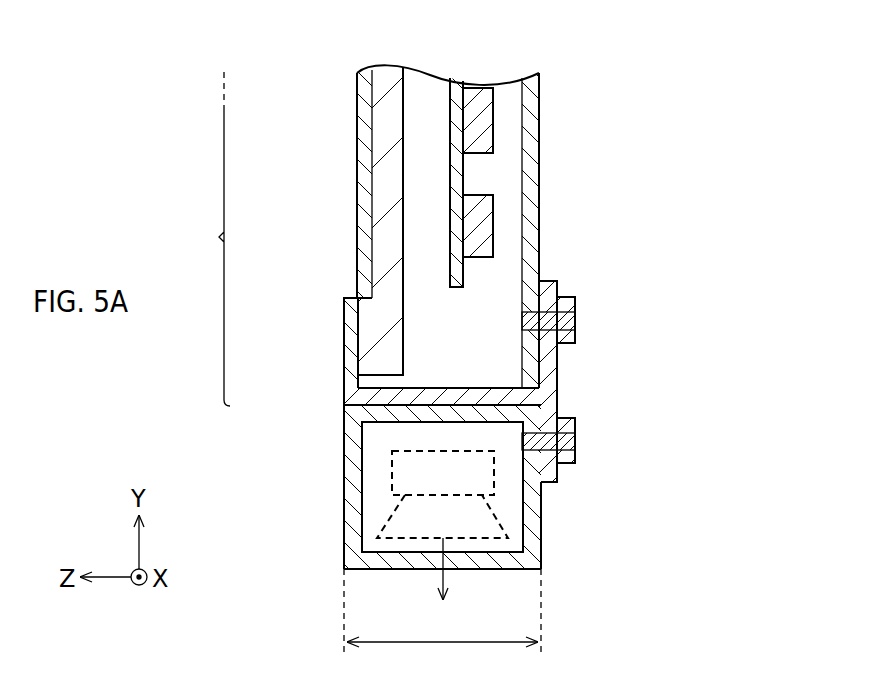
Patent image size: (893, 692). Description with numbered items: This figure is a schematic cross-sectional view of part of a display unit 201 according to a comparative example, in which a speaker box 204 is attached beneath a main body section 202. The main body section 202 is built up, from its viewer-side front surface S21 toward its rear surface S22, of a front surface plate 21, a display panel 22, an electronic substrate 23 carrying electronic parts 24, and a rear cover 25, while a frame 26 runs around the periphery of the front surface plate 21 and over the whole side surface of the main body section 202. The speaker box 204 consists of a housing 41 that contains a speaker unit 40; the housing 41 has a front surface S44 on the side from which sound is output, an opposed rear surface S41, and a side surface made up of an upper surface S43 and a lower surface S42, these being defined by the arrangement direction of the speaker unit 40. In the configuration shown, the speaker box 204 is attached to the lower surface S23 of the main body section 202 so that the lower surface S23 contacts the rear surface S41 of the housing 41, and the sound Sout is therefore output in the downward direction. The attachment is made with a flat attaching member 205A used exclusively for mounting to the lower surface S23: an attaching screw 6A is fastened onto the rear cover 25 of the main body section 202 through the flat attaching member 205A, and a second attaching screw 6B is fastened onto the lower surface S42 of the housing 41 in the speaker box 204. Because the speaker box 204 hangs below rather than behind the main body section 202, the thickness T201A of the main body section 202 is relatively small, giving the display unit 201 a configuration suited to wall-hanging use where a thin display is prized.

The display unit 201 is at (607, 57).
The main body section 202 is at (203, 239).
The speaker box 204 is at (597, 560).
The front surface plate 21 is at (367, 268).
The display panel 22 is at (388, 75).
The electronic substrate 23 is at (455, 85).
The electronic parts 24 is at (478, 117).
The rear cover 25 is at (530, 92).
The frame 26 is at (348, 310).
The flat attaching member 205A is at (550, 378).
The attaching screw 6A is at (585, 322).
The attaching screw 6B is at (585, 443).
The speaker unit 40 is at (494, 490).
The housing 41 is at (357, 527).
The front surface S21 is at (352, 170).
The rear surface S22 is at (545, 195).
The lower surface S23 is at (408, 390).
The rear surface S41 is at (410, 414).
The lower surface S42 is at (548, 532).
The upper surface S43 is at (338, 500).
The front surface S44 is at (365, 580).
The sound Sout is at (443, 588).
The thickness of the main body section T201A is at (442, 660).